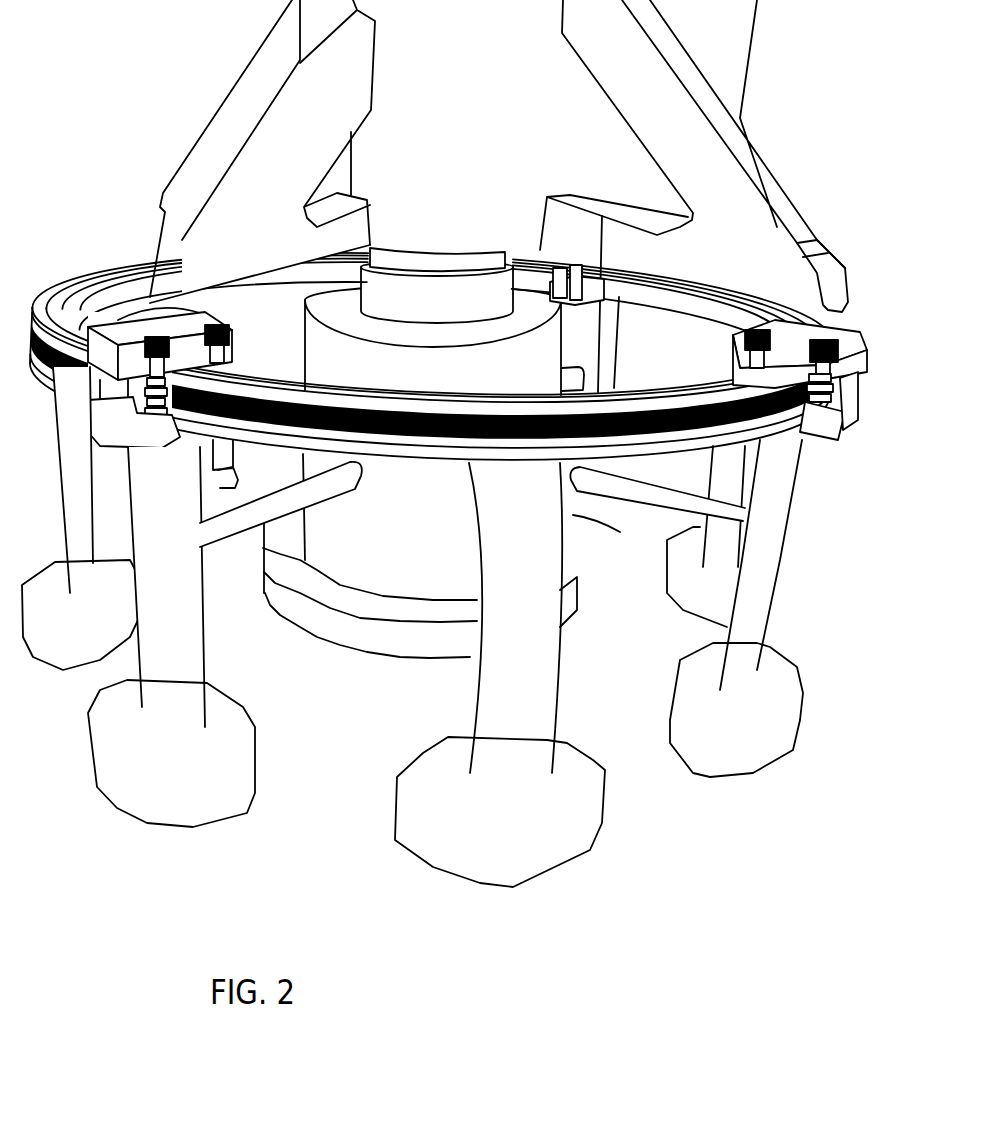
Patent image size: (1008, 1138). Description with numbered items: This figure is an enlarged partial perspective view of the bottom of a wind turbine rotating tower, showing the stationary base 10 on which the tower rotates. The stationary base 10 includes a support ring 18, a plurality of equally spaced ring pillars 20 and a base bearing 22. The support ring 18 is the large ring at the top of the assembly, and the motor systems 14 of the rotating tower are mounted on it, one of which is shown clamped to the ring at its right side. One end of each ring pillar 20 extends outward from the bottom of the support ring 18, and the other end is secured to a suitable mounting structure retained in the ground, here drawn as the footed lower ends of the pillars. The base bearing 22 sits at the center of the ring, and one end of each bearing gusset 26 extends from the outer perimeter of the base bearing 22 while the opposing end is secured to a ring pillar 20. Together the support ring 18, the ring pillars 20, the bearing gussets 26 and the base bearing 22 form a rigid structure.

The stationary base 10 is at (808, 545).
The motor system 14 is at (853, 322).
The support ring 18 is at (68, 282).
The ring pillar 20 is at (87, 681).
The base bearing 22 is at (345, 632).
The bearing gusset 26 is at (221, 542).